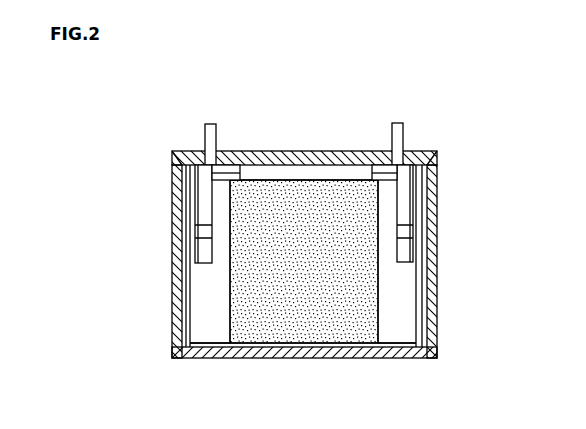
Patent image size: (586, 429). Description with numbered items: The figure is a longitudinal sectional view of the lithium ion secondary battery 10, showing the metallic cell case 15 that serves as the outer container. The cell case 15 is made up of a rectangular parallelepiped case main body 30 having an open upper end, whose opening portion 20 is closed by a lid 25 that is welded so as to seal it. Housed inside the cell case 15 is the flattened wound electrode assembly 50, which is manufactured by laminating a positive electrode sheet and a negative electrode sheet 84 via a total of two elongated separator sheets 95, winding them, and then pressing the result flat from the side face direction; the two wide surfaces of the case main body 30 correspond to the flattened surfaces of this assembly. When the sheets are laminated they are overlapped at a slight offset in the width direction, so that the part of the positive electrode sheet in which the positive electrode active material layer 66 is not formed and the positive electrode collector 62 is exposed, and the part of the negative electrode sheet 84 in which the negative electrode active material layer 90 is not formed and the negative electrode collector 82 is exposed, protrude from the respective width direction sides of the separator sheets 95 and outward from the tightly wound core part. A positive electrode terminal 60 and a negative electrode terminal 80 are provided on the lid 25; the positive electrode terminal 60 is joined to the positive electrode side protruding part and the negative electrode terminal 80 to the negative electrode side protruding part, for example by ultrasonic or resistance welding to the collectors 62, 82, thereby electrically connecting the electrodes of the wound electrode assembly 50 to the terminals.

The lithium ion secondary battery 10 is at (344, 233).
The cell case 15 is at (344, 254).
The opening portion 20 is at (304, 252).
The lid 25 is at (438, 154).
The case main body 30 is at (486, 152).
The wound electrode assembly 50 is at (318, 181).
The positive electrode terminal 60 is at (210, 124).
The positive electrode collector 62 is at (212, 337).
The positive electrode active material layer 66 is at (270, 322).
The negative electrode terminal 80 is at (399, 123).
The negative electrode collector 82 is at (393, 337).
The negative electrode sheet 84 is at (309, 365).
The negative electrode active material layer 90 is at (360, 320).
The separator sheets 95 is at (313, 330).